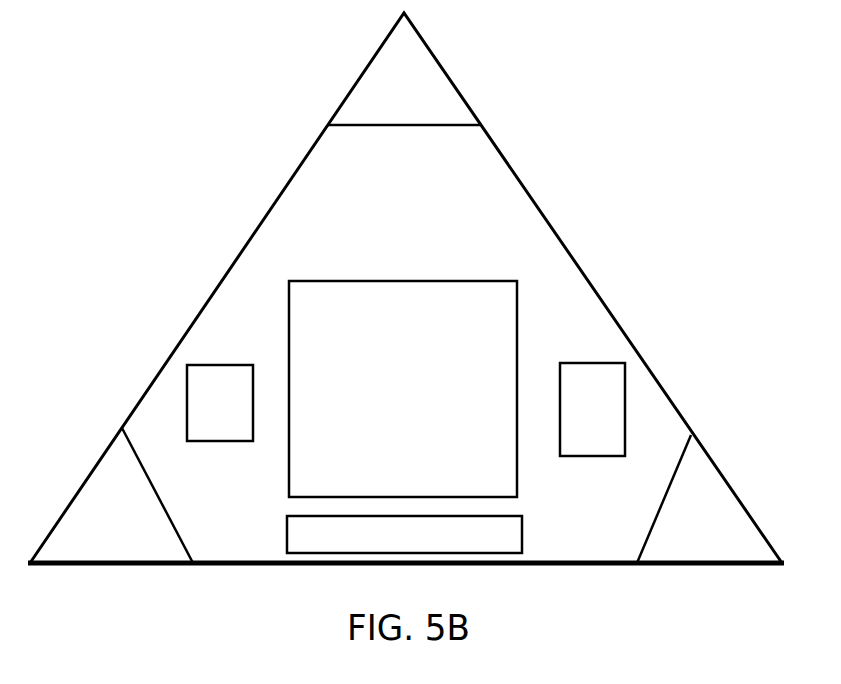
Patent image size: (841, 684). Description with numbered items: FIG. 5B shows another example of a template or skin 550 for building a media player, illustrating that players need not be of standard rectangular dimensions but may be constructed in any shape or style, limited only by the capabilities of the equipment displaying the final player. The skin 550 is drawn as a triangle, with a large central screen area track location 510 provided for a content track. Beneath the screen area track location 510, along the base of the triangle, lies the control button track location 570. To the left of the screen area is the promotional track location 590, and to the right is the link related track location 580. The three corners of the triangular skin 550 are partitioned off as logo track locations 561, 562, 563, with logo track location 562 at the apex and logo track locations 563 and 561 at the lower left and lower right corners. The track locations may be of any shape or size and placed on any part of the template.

The skin 550 is at (525, 114).
The logo track location 562 is at (420, 101).
The logo track location 563 is at (131, 533).
The logo track location 561 is at (721, 537).
The screen area track location 510 is at (488, 485).
The control button track location 570 is at (310, 548).
The promotional track location 590 is at (172, 381).
The link related track location 580 is at (643, 386).